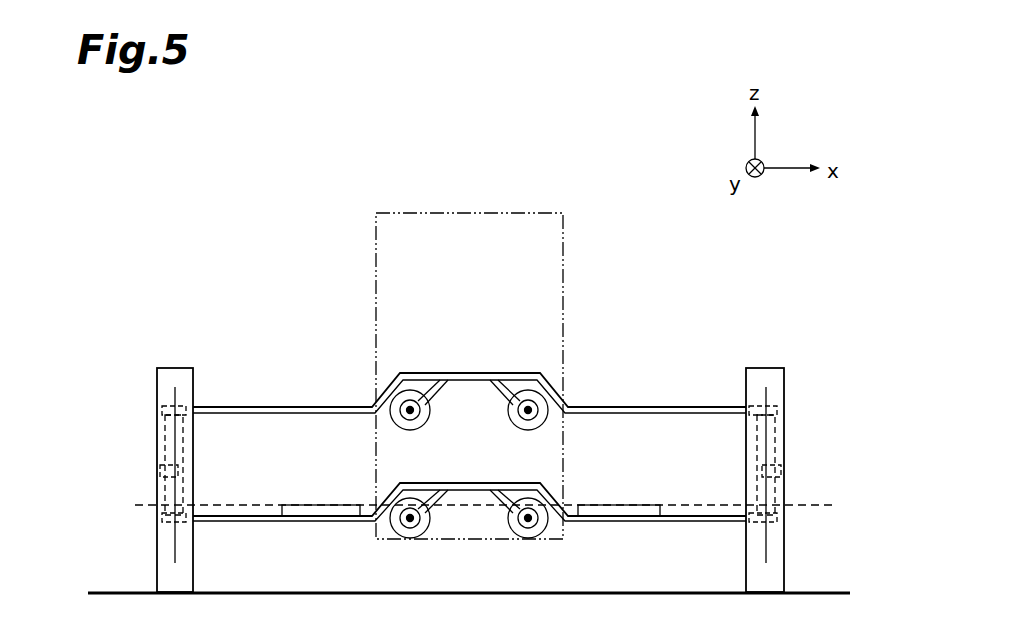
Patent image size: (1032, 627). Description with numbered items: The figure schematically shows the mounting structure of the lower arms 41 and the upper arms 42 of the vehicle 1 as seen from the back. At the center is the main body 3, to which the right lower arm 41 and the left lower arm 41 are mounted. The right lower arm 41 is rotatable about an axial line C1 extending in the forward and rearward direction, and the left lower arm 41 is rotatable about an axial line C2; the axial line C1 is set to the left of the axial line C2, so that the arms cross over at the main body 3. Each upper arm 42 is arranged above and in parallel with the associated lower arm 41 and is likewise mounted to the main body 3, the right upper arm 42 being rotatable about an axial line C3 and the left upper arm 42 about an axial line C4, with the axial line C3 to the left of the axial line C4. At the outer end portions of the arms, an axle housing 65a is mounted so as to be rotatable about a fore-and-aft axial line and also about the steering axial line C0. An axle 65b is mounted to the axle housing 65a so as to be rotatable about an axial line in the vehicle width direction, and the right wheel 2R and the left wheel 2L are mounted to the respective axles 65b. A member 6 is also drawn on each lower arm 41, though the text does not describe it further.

The vehicle 1 is at (296, 242).
The main body 3 is at (563, 298).
The left wheel 2L is at (175, 368).
The right wheel 2R is at (765, 368).
The upper arm 42 is at (285, 405).
The lower arm 41 is at (253, 516).
The stopper block 6 is at (318, 505).
The axle housing 65a is at (168, 458).
The axle 65b is at (165, 470).
The steering axial line C0 is at (175, 548).
The axial line C1 is at (408, 522).
The axial line C2 is at (537, 523).
The axial line C3 is at (405, 405).
The axial line C4 is at (535, 405).